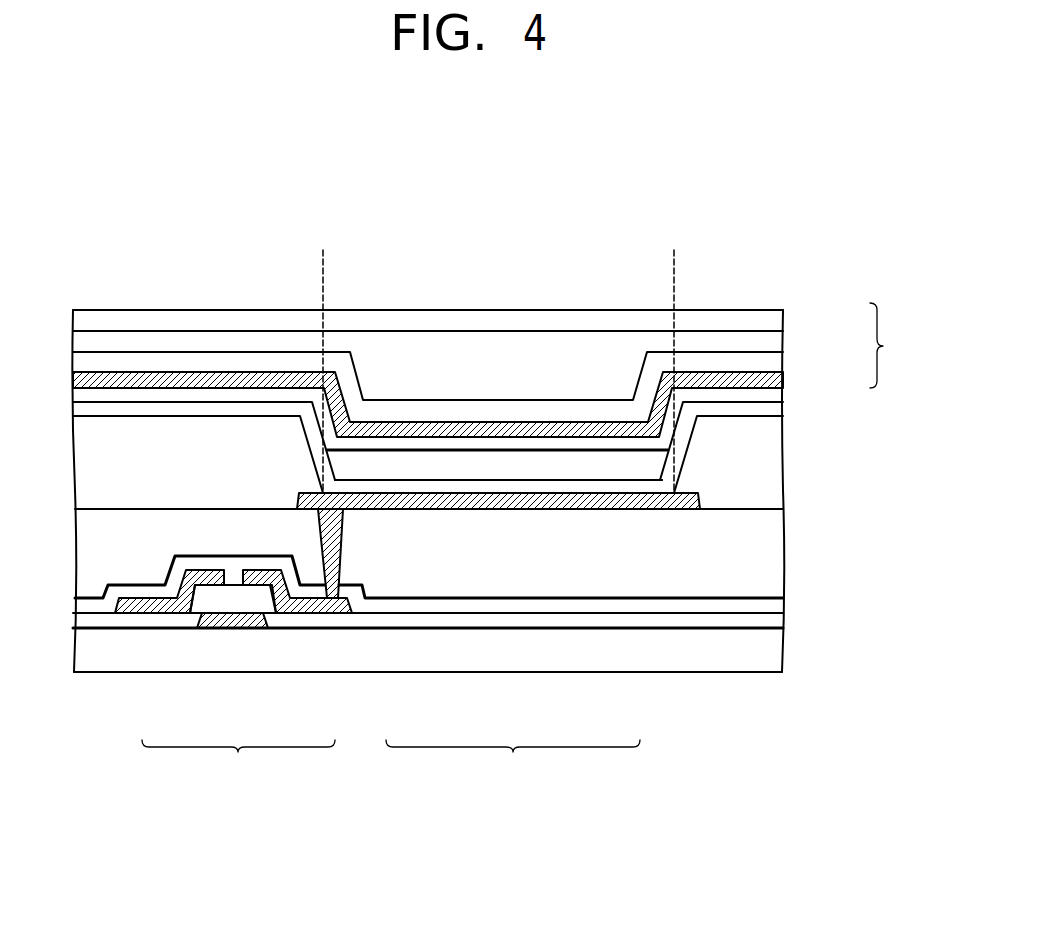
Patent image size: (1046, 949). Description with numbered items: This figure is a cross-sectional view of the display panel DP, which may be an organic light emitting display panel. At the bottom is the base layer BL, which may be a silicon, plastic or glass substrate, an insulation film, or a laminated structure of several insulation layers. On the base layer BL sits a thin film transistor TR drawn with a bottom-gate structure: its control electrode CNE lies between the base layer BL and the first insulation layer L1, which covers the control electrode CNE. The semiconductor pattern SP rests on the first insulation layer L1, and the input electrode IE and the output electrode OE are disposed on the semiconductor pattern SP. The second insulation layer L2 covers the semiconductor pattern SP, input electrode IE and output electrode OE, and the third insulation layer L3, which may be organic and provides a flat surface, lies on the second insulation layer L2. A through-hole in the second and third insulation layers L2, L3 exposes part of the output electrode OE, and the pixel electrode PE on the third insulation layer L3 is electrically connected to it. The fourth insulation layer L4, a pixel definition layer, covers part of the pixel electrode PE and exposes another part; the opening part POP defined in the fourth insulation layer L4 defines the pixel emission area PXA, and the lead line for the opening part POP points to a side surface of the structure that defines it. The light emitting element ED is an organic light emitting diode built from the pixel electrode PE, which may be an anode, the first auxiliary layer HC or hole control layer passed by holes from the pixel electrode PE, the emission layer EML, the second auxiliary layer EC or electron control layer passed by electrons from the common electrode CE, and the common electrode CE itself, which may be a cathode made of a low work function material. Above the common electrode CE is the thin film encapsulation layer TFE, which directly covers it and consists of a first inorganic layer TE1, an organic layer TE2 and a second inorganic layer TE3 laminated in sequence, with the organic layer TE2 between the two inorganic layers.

The display panel DP is at (791, 225).
The pixel emission area PXA is at (674, 253).
The thin film encapsulation layer TFE is at (898, 345).
The first inorganic layer TE1 is at (770, 363).
The organic layer TE2 is at (770, 341).
The second inorganic layer TE3 is at (770, 320).
The opening part POP is at (683, 428).
The common electrode CE is at (428, 555).
The second auxiliary layer EC is at (497, 591).
The emission layer EML is at (498, 603).
The first auxiliary layer HC is at (498, 609).
The pixel electrode PE is at (498, 616).
The fourth insulation layer L4 is at (770, 470).
The third insulation layer L3 is at (765, 552).
The second insulation layer L2 is at (767, 607).
The first insulation layer L1 is at (767, 620).
The base layer BL is at (767, 647).
The input electrode IE is at (169, 654).
The control electrode CNE is at (232, 676).
The semiconductor pattern SP is at (238, 662).
The output electrode OE is at (297, 624).
The thin film transistor TR is at (238, 763).
The light emitting element ED is at (513, 763).